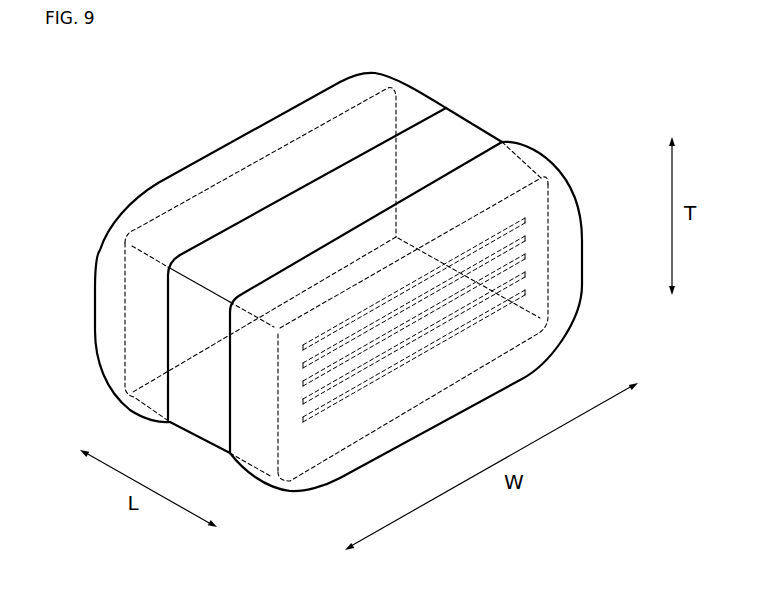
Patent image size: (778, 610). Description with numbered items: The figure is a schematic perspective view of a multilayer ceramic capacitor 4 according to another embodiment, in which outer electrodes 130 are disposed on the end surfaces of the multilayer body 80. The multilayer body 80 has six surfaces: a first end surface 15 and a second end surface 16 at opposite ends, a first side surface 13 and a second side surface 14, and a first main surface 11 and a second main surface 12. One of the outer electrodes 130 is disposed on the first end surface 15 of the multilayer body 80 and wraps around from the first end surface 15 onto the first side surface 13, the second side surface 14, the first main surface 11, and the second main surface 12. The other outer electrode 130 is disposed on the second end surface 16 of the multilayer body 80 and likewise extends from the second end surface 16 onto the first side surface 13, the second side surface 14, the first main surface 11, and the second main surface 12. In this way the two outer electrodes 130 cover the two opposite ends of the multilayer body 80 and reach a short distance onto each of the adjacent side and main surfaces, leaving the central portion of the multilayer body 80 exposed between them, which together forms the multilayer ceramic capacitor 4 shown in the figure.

The multilayer ceramic capacitor 4 is at (612, 109).
The first main surface 11 is at (438, 130).
The second main surface 12 is at (247, 425).
The first side surface 13 is at (190, 403).
The second side surface 14 is at (460, 155).
The first end surface 15 is at (217, 218).
The second end surface 16 is at (517, 333).
The multilayer body 80 is at (477, 123).
The outer electrode 130 is at (257, 138).